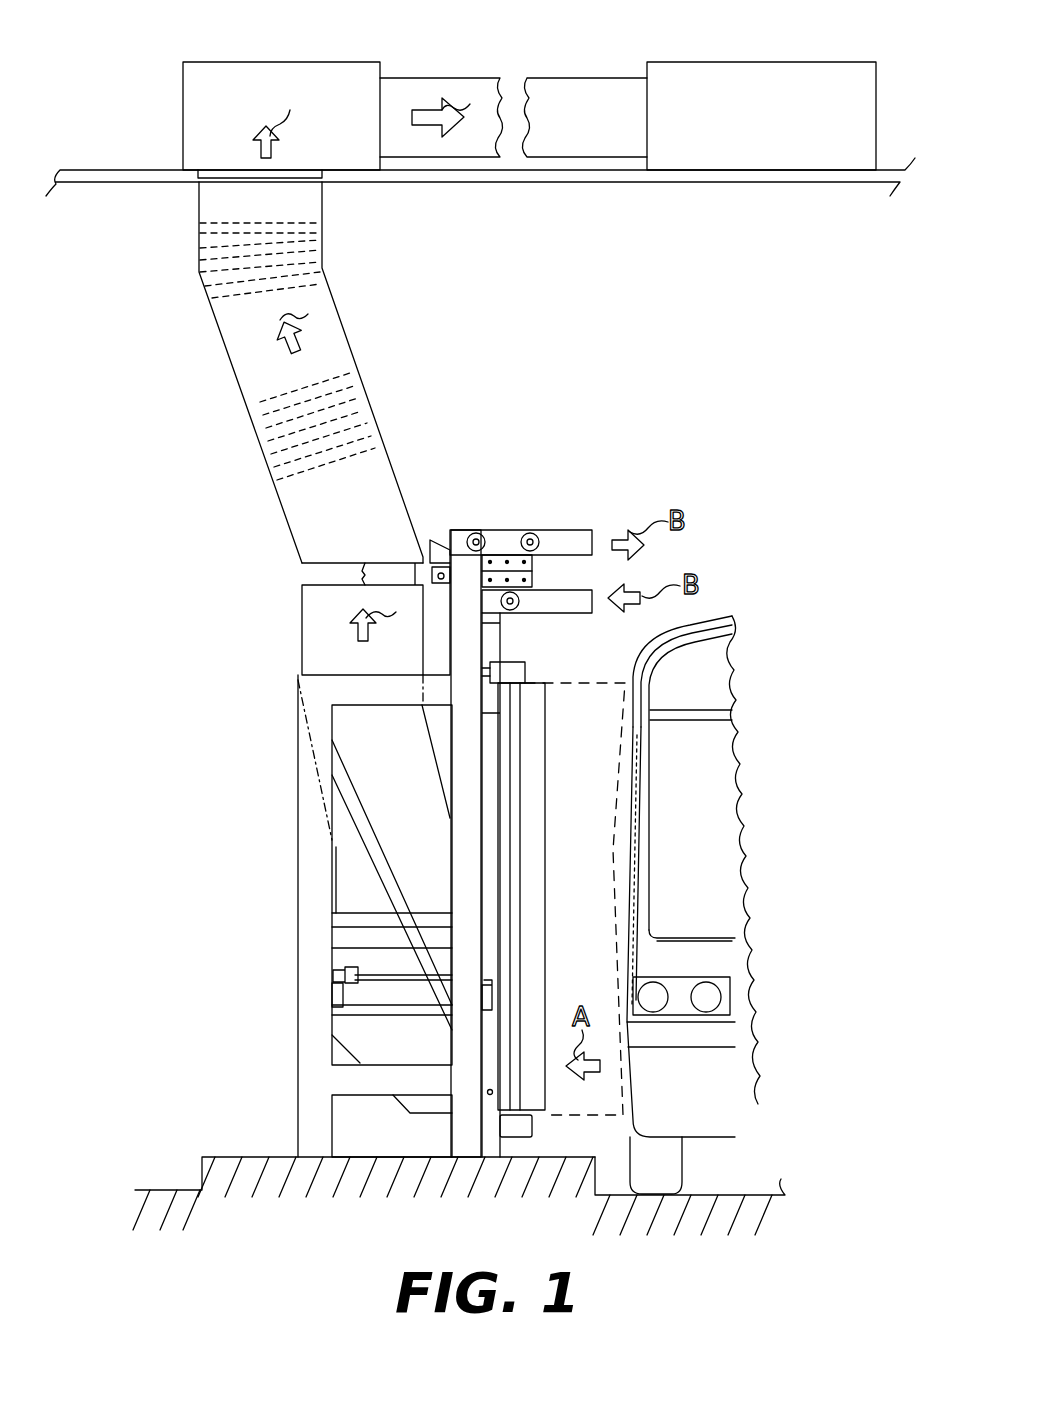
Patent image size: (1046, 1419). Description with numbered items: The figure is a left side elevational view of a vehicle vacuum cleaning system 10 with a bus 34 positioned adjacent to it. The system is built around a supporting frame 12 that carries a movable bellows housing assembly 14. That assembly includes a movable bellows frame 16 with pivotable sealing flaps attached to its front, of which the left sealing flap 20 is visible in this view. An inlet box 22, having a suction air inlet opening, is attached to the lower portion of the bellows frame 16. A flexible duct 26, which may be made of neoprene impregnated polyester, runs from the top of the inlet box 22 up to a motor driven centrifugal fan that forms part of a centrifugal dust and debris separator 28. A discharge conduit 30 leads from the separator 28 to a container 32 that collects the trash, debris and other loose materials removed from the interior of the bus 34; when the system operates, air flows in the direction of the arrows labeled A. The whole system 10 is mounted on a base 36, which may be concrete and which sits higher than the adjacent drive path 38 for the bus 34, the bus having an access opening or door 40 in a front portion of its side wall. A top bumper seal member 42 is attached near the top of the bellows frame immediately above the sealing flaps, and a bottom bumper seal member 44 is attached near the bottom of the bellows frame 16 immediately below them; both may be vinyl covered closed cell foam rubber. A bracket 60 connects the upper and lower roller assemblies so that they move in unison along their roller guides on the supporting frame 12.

The vehicle vacuum cleaning system 10 is at (444, 432).
The supporting frame 12 is at (298, 867).
The bellows housing assembly 14 is at (510, 637).
The bellows frame 16 is at (497, 838).
The left sealing flap 20 is at (546, 788).
The inlet box 22 is at (402, 1106).
The flexible duct 26 is at (344, 324).
The centrifugal dust and debris separator 28 is at (270, 62).
The discharge conduit 30 is at (428, 78).
The container 32 is at (722, 62).
The bus 34 is at (704, 876).
The base 36 is at (202, 1164).
The drive path 38 is at (780, 1196).
The access opening or door 40 is at (640, 770).
The top bumper seal member 42 is at (524, 670).
The bottom bumper seal member 44 is at (530, 1128).
The bracket 60 is at (534, 574).